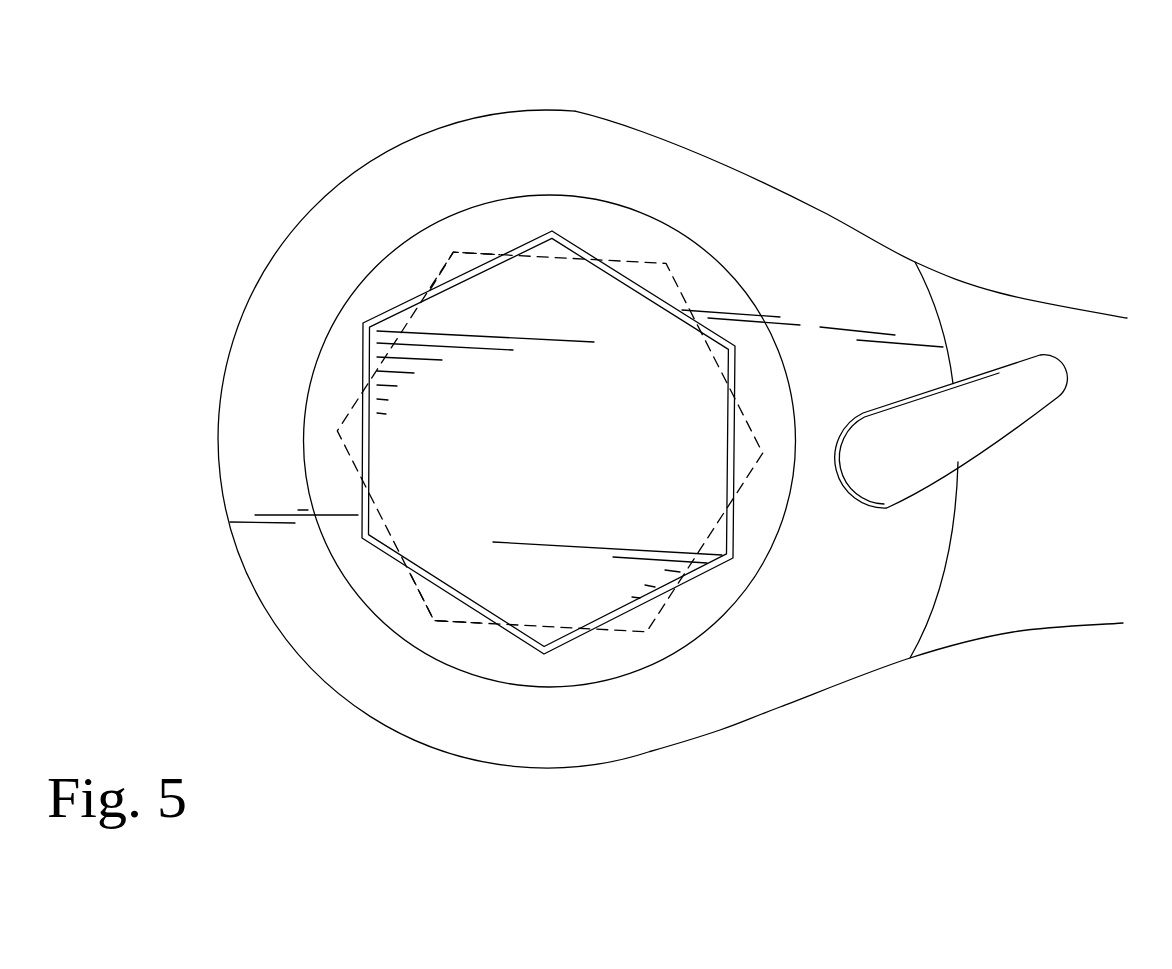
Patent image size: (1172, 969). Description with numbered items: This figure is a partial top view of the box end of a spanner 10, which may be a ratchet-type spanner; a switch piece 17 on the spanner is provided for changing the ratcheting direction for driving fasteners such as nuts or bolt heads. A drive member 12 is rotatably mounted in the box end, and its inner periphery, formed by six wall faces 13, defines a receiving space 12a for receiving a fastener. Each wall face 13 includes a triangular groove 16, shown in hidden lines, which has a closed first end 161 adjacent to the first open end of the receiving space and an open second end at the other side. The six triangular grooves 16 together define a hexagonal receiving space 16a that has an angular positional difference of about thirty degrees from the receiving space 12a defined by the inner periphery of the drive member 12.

The spanner 10 is at (852, 681).
The drive member 12 is at (583, 218).
The receiving space 12a is at (700, 368).
The wall face 13 is at (430, 300).
The triangular groove 16 is at (670, 275).
The closed first end 161 is at (448, 250).
The hexagonal receiving space 16a is at (447, 598).
The switch piece 17 is at (1002, 385).